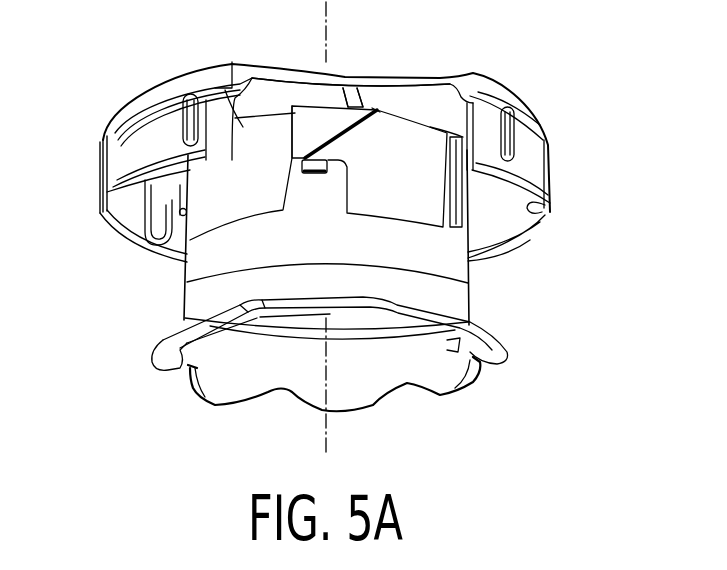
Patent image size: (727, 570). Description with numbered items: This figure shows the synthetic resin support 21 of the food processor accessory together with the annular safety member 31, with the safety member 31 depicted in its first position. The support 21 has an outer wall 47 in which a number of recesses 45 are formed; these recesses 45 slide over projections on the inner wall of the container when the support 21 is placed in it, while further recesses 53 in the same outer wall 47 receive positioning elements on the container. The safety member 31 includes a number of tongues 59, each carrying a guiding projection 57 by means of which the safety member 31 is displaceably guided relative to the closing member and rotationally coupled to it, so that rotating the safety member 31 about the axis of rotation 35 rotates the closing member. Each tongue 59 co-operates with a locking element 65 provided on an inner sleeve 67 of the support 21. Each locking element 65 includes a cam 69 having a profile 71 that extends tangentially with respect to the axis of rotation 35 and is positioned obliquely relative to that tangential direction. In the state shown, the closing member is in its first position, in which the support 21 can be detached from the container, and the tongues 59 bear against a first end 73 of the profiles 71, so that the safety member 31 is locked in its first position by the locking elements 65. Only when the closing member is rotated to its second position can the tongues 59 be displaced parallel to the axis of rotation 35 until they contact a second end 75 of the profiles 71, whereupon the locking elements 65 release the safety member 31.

The support 21 is at (423, 80).
The safety member 31 is at (440, 388).
The axis of rotation 35 is at (323, 430).
The recesses 45 is at (107, 173).
The outer wall 47 is at (140, 140).
The recesses 53 is at (192, 146).
The guiding projections 57 is at (313, 173).
The tongue 59 is at (330, 190).
The locking element 65 is at (322, 118).
The inner sleeve 67 is at (225, 90).
The cam 69 is at (241, 173).
The profile 71 is at (350, 133).
The first end 73 is at (292, 158).
The second end 75 is at (363, 100).